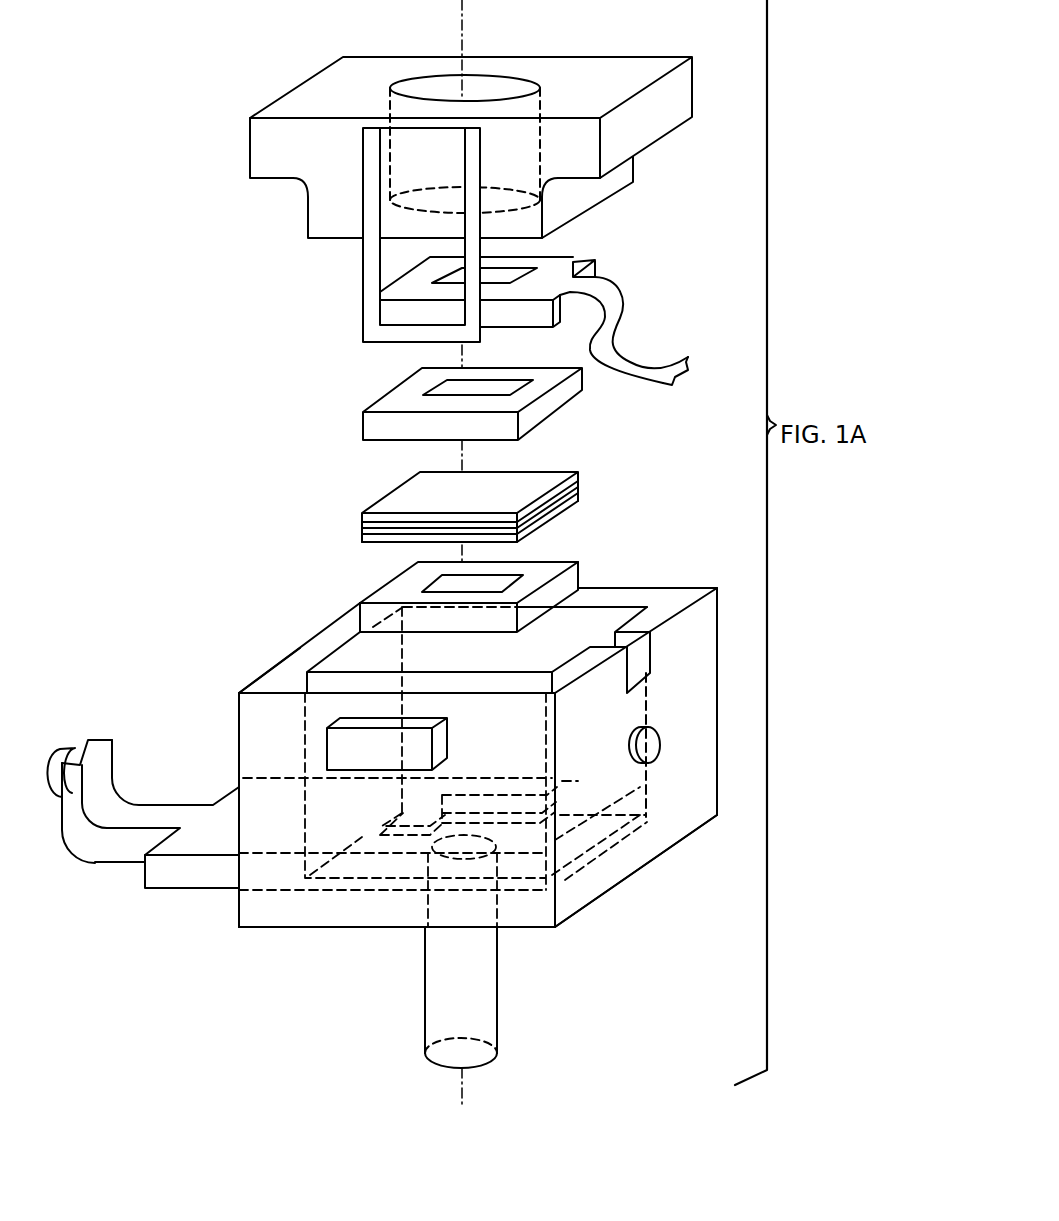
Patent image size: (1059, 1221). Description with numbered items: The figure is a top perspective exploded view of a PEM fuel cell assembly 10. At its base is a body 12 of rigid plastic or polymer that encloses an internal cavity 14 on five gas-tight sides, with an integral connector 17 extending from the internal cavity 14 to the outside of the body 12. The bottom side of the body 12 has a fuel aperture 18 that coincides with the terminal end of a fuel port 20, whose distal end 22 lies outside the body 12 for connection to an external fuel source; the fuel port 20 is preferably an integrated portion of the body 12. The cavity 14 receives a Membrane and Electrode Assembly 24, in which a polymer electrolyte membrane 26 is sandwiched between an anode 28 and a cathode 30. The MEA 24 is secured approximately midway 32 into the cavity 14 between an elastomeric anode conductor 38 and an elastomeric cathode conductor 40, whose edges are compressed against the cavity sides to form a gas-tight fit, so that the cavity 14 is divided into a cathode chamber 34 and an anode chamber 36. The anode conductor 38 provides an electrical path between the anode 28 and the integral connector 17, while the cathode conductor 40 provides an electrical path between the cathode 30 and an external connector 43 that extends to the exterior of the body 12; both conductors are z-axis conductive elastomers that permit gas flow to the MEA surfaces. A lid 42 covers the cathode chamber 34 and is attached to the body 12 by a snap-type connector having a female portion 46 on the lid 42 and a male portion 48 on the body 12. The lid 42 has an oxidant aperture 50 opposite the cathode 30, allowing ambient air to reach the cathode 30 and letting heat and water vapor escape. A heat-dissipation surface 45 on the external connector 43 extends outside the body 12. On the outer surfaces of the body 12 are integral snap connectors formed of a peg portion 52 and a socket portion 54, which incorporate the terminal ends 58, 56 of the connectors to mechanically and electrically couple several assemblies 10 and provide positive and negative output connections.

The PEM fuel cell assembly 10 is at (223, 485).
The body 12 is at (237, 705).
The internal cavity 14 is at (572, 775).
The integral connector 17 is at (161, 812).
The fuel aperture 18 is at (430, 846).
The fuel port 20 is at (482, 1010).
The distal end 22 is at (480, 1065).
The Membrane and Electrode Assembly 24 is at (282, 473).
The Polymer Electrolyte Membrane 26 is at (362, 528).
The anode 28 is at (373, 542).
The cathode 30 is at (398, 495).
The midway 32 is at (672, 698).
The cathode chamber 34 is at (426, 167).
The anode chamber 36 is at (645, 780).
The elastomeric anode conductor 38 is at (370, 608).
The elastomeric cathode conductor 40 is at (375, 428).
The lid 42 is at (265, 149).
The external connector 43 is at (573, 263).
The heat-dissipation surface 45 is at (647, 380).
The female portion 46 is at (375, 332).
The male portion 48 is at (375, 760).
The oxidant aperture 50 is at (423, 86).
The peg portion 52 is at (652, 750).
The socket portion 54 is at (68, 743).
The terminal end 56 is at (640, 656).
The terminal end 58 is at (50, 748).